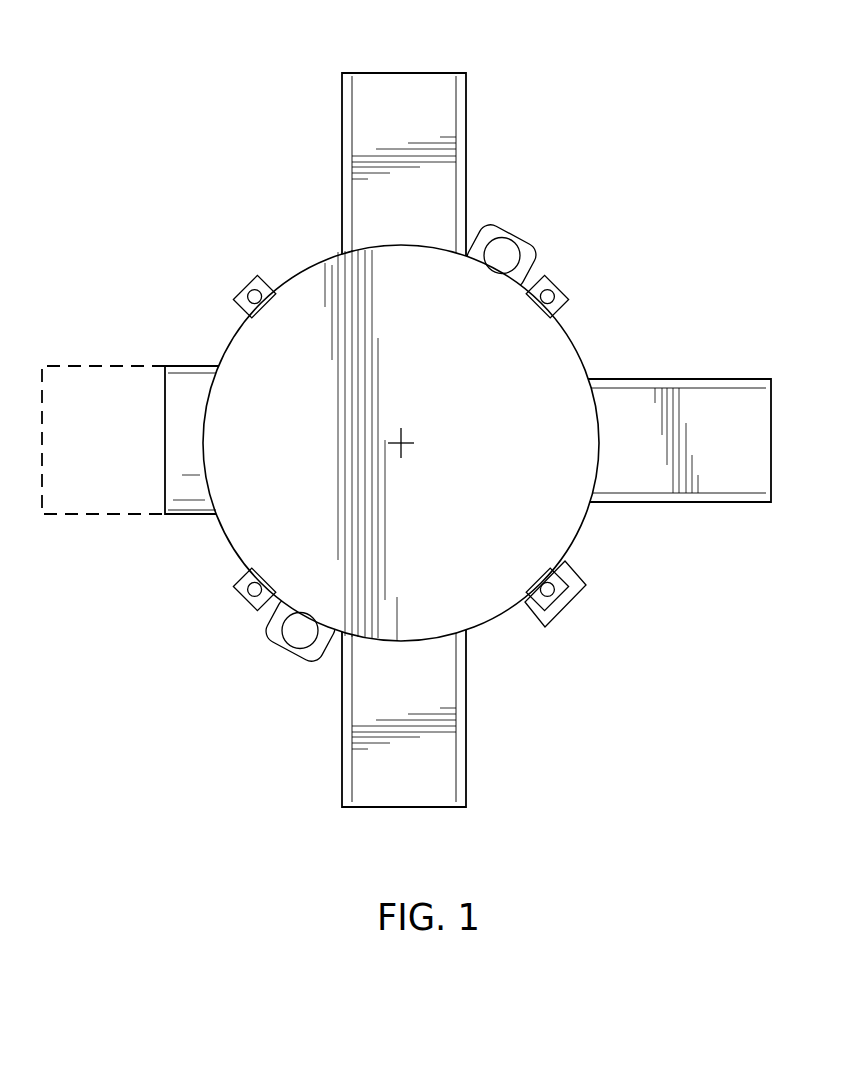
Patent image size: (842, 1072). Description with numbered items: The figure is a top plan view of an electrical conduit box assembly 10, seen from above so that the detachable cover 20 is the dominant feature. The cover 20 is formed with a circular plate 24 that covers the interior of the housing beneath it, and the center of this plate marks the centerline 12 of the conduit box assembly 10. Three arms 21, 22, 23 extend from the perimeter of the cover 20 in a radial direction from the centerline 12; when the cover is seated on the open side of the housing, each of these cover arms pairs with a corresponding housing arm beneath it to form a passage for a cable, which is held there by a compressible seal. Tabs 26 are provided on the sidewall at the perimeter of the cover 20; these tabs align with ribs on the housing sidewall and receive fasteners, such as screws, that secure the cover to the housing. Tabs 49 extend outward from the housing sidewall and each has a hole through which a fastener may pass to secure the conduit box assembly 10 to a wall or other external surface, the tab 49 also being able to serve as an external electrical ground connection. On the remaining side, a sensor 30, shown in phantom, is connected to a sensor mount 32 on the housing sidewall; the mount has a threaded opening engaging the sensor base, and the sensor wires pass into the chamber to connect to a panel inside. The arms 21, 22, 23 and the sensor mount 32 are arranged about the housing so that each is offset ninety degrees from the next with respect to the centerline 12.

The conduit box assembly 10 is at (224, 170).
The centerline 12 is at (404, 446).
The detachable cover 20 is at (530, 385).
The cover arm 21 is at (400, 808).
The cover arm 22 is at (773, 400).
The cover arm 23 is at (405, 72).
The circular plate 24 is at (283, 471).
The tabs 26 is at (247, 283).
The sensor 30 is at (72, 365).
The sensor mount 32 is at (188, 516).
The tab 49 is at (525, 243).